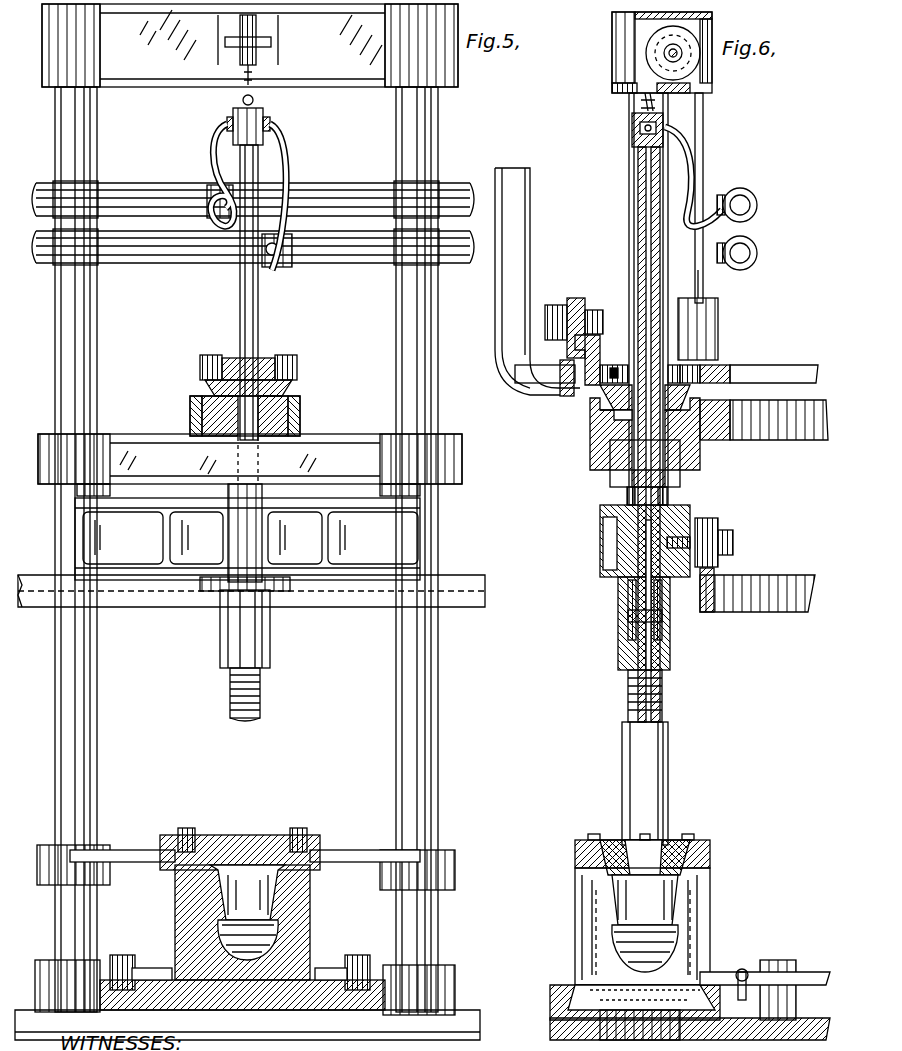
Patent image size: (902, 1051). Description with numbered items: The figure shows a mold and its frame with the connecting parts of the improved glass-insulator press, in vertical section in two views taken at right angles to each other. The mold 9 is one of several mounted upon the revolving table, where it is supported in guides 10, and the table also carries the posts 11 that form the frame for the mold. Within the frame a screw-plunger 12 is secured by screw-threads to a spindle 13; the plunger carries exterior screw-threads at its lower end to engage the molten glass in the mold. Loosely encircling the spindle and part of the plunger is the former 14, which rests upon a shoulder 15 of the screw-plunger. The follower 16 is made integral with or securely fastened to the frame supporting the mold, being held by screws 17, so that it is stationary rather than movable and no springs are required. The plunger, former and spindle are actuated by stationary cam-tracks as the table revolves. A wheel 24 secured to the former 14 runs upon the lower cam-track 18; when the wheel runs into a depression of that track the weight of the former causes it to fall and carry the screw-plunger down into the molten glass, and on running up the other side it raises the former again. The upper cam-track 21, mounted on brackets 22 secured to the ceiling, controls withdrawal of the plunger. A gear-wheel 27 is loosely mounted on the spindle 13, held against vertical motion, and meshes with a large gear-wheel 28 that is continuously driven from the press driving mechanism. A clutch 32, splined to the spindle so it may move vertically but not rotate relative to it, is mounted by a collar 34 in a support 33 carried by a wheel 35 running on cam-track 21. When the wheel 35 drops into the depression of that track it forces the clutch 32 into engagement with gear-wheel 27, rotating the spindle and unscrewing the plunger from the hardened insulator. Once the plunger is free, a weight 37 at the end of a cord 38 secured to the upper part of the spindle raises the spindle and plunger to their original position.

In FIG. 5, the mold 9 is at (174, 880).
In FIG. 6, the mold 9 is at (710, 890).
In FIG. 5, the guides 10 is at (115, 965).
In FIG. 5, the posts 11 is at (88, 728).
In FIG. 5, the screw-plunger 12 is at (262, 700).
In FIG. 6, the screw-plunger 12 is at (626, 698).
In FIG. 5, the spindle 13 is at (258, 325).
In FIG. 6, the spindle 13 is at (632, 291).
In FIG. 5, the former 14 is at (268, 640).
In FIG. 6, the former 14 is at (605, 546).
In FIG. 5, the shoulder 15 is at (217, 600).
In FIG. 6, the shoulder 15 is at (630, 622).
In FIG. 5, the follower 16 is at (210, 835).
In FIG. 6, the follower 16 is at (680, 840).
In FIG. 5, the screws 17 is at (186, 828).
In FIG. 6, the cam-track 18 is at (760, 578).
In FIG. 6, the cam-track 21 is at (560, 392).
In FIG. 6, the brackets 22 is at (502, 327).
In FIG. 6, the wheel 24 is at (712, 520).
In FIG. 5, the gear-wheel 27 is at (300, 418).
In FIG. 6, the gear-wheel 27 is at (592, 440).
In FIG. 6, the large gear-wheel 28 is at (718, 441).
In FIG. 5, the clutch 32 is at (297, 384).
In FIG. 6, the clutch 32 is at (600, 388).
In FIG. 6, the support 33 is at (600, 345).
In FIG. 5, the collar 34 is at (290, 358).
In FIG. 6, the collar 34 is at (616, 365).
In FIG. 6, the wheel 35 is at (570, 293).
In FIG. 6, the weight 37 is at (718, 330).
In FIG. 6, the cord 38 is at (703, 150).